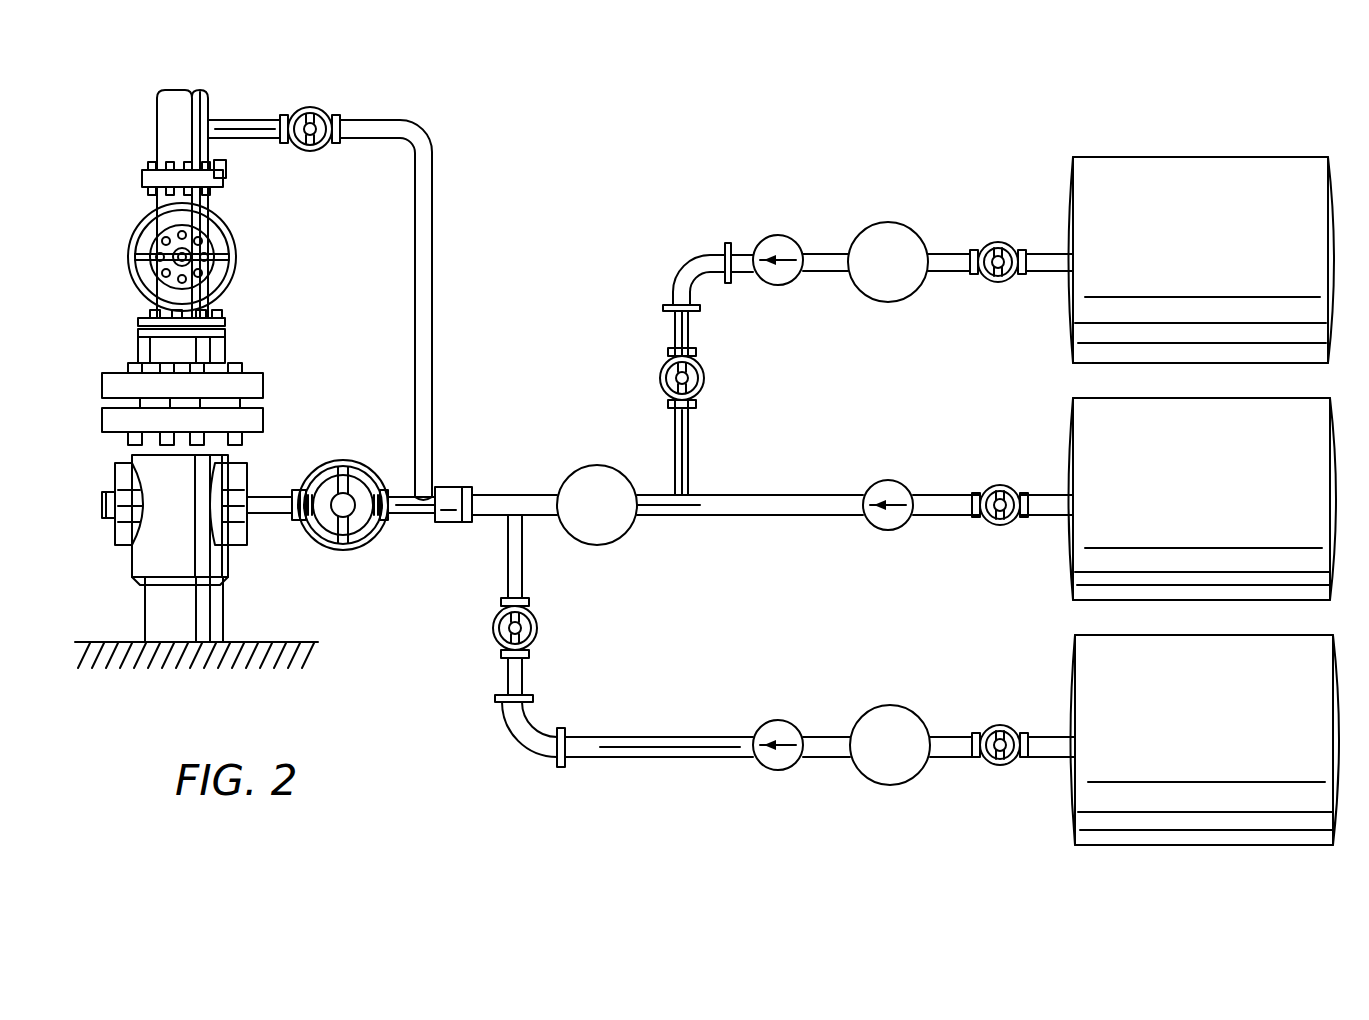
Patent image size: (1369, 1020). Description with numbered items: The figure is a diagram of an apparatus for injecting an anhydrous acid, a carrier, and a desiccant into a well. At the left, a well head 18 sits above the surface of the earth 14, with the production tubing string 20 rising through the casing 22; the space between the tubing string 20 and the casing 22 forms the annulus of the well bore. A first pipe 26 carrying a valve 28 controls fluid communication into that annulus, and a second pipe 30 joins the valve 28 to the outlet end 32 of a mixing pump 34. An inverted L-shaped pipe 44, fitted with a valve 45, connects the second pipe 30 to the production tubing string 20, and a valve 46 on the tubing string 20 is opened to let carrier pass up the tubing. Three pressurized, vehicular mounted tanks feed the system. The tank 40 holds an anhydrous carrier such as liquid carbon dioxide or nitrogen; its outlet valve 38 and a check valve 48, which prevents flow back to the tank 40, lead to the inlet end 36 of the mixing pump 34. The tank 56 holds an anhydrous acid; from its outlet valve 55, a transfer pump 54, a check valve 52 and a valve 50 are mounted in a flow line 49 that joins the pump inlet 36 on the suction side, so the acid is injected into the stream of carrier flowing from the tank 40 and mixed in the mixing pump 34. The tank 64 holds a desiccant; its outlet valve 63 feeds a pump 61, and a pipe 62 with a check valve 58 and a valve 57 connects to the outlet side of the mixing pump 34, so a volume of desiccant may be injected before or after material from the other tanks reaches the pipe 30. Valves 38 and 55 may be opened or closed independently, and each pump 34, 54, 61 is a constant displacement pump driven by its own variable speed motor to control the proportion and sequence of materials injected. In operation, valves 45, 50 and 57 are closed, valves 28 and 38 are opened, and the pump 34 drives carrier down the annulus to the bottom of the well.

The surface of the earth 14 is at (262, 642).
The well head 18 is at (145, 466).
The production tubing string 20 is at (168, 148).
The casing 22 is at (165, 608).
The first pipe 26 is at (262, 513).
The valve 28 is at (338, 462).
The second pipe 30 is at (425, 505).
The outlet end 32 is at (452, 522).
The mixing pump 34 is at (622, 535).
The inlet end 36 is at (758, 514).
The valve 38 is at (998, 485).
The tank 40 is at (1190, 500).
The inverted L-shaped pipe 44 is at (435, 255).
The valve 45 is at (310, 107).
The valve 46 is at (205, 236).
The check valve 48 is at (883, 480).
The flow line 49 is at (690, 415).
The valve 50 is at (700, 370).
The check valve 52 is at (773, 235).
The transfer pump 54 is at (925, 202).
The valve 55 is at (996, 242).
The tank 56 is at (1195, 236).
The valve 57 is at (537, 620).
The check valve 58 is at (773, 720).
The pump 61 is at (903, 708).
The pipe 62 is at (700, 735).
The valve 63 is at (1000, 725).
The tank 64 is at (1195, 714).